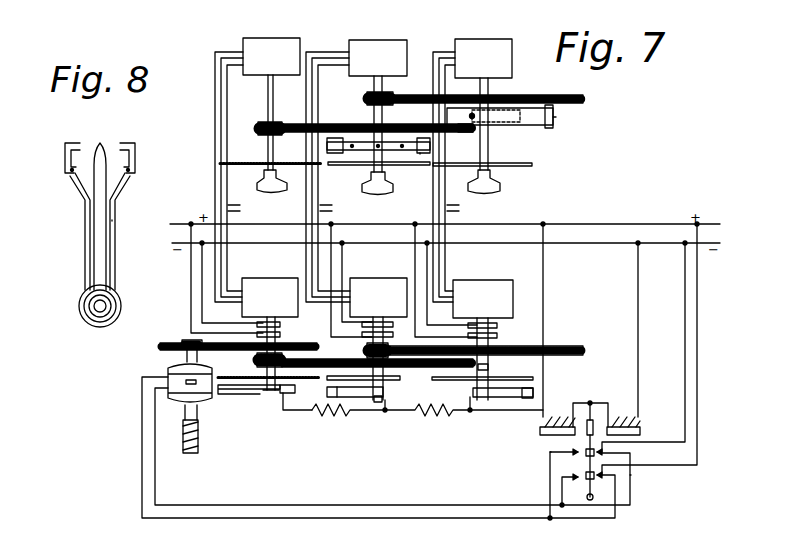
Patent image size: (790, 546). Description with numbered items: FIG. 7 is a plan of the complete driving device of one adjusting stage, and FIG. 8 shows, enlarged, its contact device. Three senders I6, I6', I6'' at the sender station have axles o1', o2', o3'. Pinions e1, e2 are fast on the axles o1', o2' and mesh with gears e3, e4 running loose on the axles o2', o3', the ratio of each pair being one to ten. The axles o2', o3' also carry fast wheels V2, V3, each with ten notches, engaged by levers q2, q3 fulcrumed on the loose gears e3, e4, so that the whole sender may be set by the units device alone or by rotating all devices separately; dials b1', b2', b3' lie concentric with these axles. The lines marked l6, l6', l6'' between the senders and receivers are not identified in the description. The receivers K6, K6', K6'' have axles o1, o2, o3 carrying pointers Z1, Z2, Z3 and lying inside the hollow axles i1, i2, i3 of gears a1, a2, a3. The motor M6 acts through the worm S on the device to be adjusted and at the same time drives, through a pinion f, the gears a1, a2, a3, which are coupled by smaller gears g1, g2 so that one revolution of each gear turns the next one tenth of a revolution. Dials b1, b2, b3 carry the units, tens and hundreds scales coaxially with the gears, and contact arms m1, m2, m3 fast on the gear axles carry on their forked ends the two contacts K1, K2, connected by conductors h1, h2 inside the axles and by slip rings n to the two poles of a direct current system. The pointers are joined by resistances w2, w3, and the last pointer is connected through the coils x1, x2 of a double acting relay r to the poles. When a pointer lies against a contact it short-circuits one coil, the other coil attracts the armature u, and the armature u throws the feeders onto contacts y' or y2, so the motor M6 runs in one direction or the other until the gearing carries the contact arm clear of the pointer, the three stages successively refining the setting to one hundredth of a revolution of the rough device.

In FIG. 7, the sender I6 is at (257, 158).
In FIG. 7, the sender I6' is at (356, 158).
In FIG. 7, the sender I6'' is at (472, 158).
In FIG. 7, the axle of sending device o1' is at (258, 122).
In FIG. 7, the axle of sending device o2' is at (366, 124).
In FIG. 7, the axle of sending device o3' is at (472, 124).
In FIG. 7, the pinion e1 is at (258, 128).
In FIG. 7, the pinion e2 is at (367, 99).
In FIG. 7, the gear e3 is at (466, 133).
In FIG. 7, the gear e4 is at (535, 95).
In FIG. 7, the notched wheel V2 is at (368, 150).
In FIG. 7, the notched wheel V3 is at (475, 117).
In FIG. 7, the lever q2 is at (422, 155).
In FIG. 7, the lever q3 is at (558, 117).
In FIG. 7, the dial b1' is at (271, 183).
In FIG. 7, the dial b2' is at (379, 187).
In FIG. 7, the dial b3' is at (486, 179).
In FIG. 7, the leads l6 is at (241, 214).
In FIG. 7, the leads l6' is at (335, 214).
In FIG. 7, the leads l6'' is at (463, 214).
In FIG. 7, the receiver K6 is at (270, 286).
In FIG. 7, the receiver K6' is at (378, 286).
In FIG. 7, the receiver K6'' is at (483, 287).
In FIG. 7, the axle of receiving device o1 is at (248, 348).
In FIG. 7, the axle of receiving device o2 is at (384, 349).
In FIG. 7, the axle of receiving device o3 is at (483, 349).
In FIG. 7, the slip rings n is at (280, 328).
In FIG. 7, the gear a1 is at (310, 343).
In FIG. 7, the gear a2 is at (320, 370).
In FIG. 7, the gear a3 is at (562, 340).
In FIG. 7, the smaller gear g1 is at (257, 362).
In FIG. 7, the smaller gear g2 is at (367, 351).
In FIG. 7, the pinion f is at (182, 342).
In FIG. 7, the motor M6 is at (186, 382).
In FIG. 7, the worm S is at (182, 431).
In FIG. 8, the hollow axle i1 is at (98, 320).
In FIG. 7, the hollow axle i1 is at (296, 397).
In FIG. 7, the hollow axle i2 is at (384, 392).
In FIG. 7, the hollow axle i3 is at (490, 367).
In FIG. 7, the dial b1 is at (262, 411).
In FIG. 7, the dial b2 is at (363, 410).
In FIG. 7, the dial b3 is at (482, 391).
In FIG. 8, the contact arm m1 is at (112, 220).
In FIG. 7, the contact arm m1 is at (230, 390).
In FIG. 7, the contact arm m2 is at (332, 398).
In FIG. 7, the contact arm m3 is at (533, 392).
In FIG. 8, the pointer Z1 is at (94, 207).
In FIG. 7, the pointer Z1 is at (270, 395).
In FIG. 7, the pointer Z2 is at (382, 402).
In FIG. 7, the pointer Z3 is at (505, 398).
In FIG. 7, the resistance w2 is at (340, 416).
In FIG. 7, the resistance w3 is at (438, 416).
In FIG. 7, the relay coil x1 is at (574, 417).
In FIG. 7, the relay coil x2 is at (623, 417).
In FIG. 7, the armature u is at (585, 444).
In FIG. 7, the motor circuit contacts y' is at (558, 463).
In FIG. 7, the motor circuit contacts y2 is at (634, 476).
In FIG. 7, the double acting relay r is at (532, 494).
In FIG. 8, the contact K1 is at (72, 150).
In FIG. 8, the contact K2 is at (128, 150).
In FIG. 8, the conductor h1 is at (86, 258).
In FIG. 8, the conductor h2 is at (112, 258).